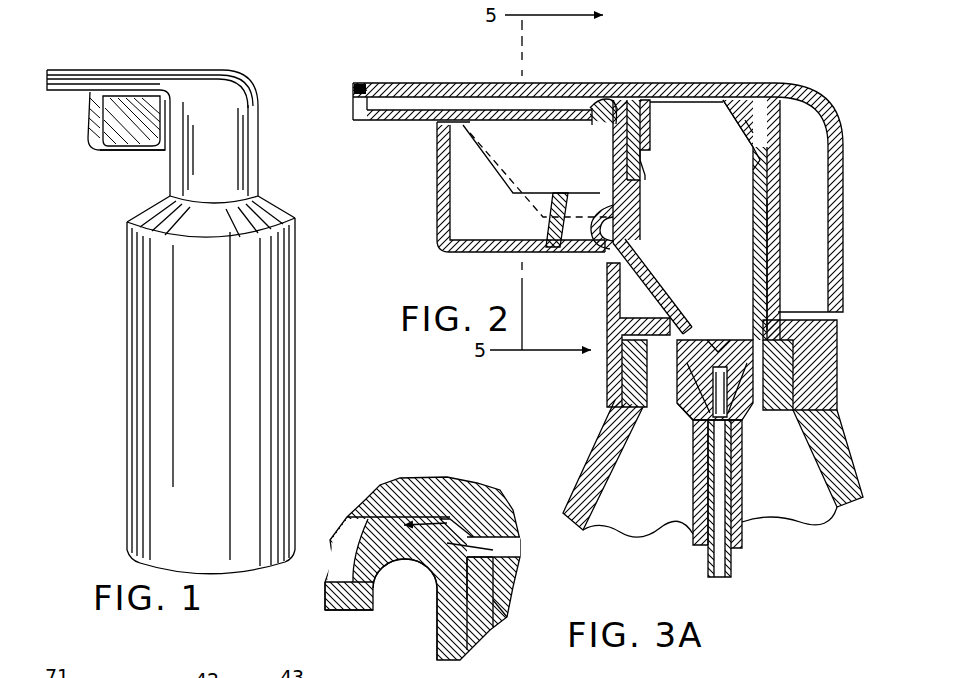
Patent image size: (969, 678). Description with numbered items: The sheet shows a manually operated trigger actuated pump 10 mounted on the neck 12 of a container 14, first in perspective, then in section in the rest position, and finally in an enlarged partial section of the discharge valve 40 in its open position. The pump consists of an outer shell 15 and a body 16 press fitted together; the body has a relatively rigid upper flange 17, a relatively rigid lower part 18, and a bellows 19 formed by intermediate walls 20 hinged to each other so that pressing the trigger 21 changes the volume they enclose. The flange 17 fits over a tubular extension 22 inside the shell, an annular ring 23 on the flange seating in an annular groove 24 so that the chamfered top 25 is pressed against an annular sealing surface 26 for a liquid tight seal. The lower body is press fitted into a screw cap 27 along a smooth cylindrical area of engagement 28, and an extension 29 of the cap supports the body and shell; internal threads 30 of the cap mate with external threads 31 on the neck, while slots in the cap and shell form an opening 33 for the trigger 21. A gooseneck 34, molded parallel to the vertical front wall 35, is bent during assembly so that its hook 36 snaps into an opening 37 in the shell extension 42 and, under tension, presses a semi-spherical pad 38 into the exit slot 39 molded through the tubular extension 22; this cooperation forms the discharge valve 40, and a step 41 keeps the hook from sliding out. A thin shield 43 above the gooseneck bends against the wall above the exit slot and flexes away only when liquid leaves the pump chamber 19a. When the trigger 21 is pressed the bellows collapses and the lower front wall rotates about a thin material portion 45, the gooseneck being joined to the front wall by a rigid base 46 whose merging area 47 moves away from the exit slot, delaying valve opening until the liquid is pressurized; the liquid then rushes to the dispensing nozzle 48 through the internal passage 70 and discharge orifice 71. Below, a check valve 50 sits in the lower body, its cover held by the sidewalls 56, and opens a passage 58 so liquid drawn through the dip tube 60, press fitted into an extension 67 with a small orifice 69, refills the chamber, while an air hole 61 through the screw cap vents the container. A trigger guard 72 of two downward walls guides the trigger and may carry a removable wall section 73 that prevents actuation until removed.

In FIG. 1, the trigger actuated pump 10 is at (236, 65).
In FIG. 1, the neck 12 is at (262, 215).
In FIG. 1, the container 14 is at (143, 375).
In FIG. 2, the container 14 is at (597, 465).
In FIG. 1, the outer shell 15 is at (242, 146).
In FIG. 2, the outer shell 15 is at (844, 112).
In FIG. 2, the body 16 is at (748, 222).
In FIG. 2, the upper flange 17 is at (645, 190).
In FIG. 2, the lower part 18 is at (742, 510).
In FIG. 2, the bellows 19 is at (692, 300).
In FIG. 2, the pump chamber 19a is at (731, 207).
In FIG. 2, the intermediate walls 20 is at (664, 284).
In FIG. 1, the trigger 21 is at (113, 155).
In FIG. 2, the trigger 21 is at (468, 252).
In FIG. 2, the tubular extension 22 is at (736, 108).
In FIG. 3A, the tubular extension 22 is at (512, 622).
In FIG. 2, the annular ring 23 is at (758, 150).
In FIG. 2, the annular groove 24 is at (649, 140).
In FIG. 2, the chamfered top 25 is at (771, 100).
In FIG. 2, the annular sealing surface 26 is at (644, 100).
In FIG. 3A, the annular sealing surface 26 is at (496, 586).
In FIG. 2, the screw cap 27 is at (609, 282).
In FIG. 2, the area of engagement 28 is at (768, 368).
In FIG. 2, the extension 29 is at (770, 265).
In FIG. 2, the internal threads 30 is at (618, 378).
In FIG. 2, the external threads 31 is at (693, 388).
In FIG. 2, the opening 33 is at (612, 265).
In FIG. 2, the gooseneck 34 is at (615, 130).
In FIG. 3A, the gooseneck 34 is at (440, 625).
In FIG. 2, the vertical front wall 35 is at (650, 162).
In FIG. 2, the hook 36 is at (598, 102).
In FIG. 3A, the hook 36 is at (370, 518).
In FIG. 2, the opening 37 is at (602, 134).
In FIG. 3A, the opening 37 is at (394, 616).
In FIG. 2, the pad 38 is at (627, 100).
In FIG. 3A, the pad 38 is at (522, 542).
In FIG. 2, the exit slot 39 is at (646, 105).
In FIG. 3A, the exit slot 39 is at (510, 560).
In FIG. 2, the discharge valve 40 is at (610, 132).
In FIG. 2, the step 41 is at (590, 121).
In FIG. 3A, the step 41 is at (330, 566).
In FIG. 1, the extension 42 is at (82, 78).
In FIG. 2, the extension 42 is at (500, 84).
In FIG. 3A, the extension 42 is at (470, 496).
In FIG. 2, the shield 43 is at (616, 100).
In FIG. 3A, the shield 43 is at (437, 518).
In FIG. 2, the thin material portion 45 is at (642, 153).
In FIG. 2, the rigid base 46 is at (610, 247).
In FIG. 2, the merging area 47 is at (540, 222).
In FIG. 2, the dispensing nozzle 48 is at (393, 100).
In FIG. 2, the check valve 50 is at (694, 412).
In FIG. 2, the sidewalls 56 is at (680, 410).
In FIG. 2, the passage 58 is at (720, 398).
In FIG. 2, the dip tube 60 is at (736, 570).
In FIG. 2, the air hole 61 is at (695, 326).
In FIG. 2, the extension 67 is at (700, 505).
In FIG. 2, the orifice 69 is at (722, 424).
In FIG. 2, the internal passage 70 is at (440, 110).
In FIG. 3A, the internal passage 70 is at (350, 557).
In FIG. 2, the discharge orifice 71 is at (358, 86).
In FIG. 1, the trigger guard 72 is at (146, 128).
In FIG. 1, the removable wall section 73 is at (93, 148).